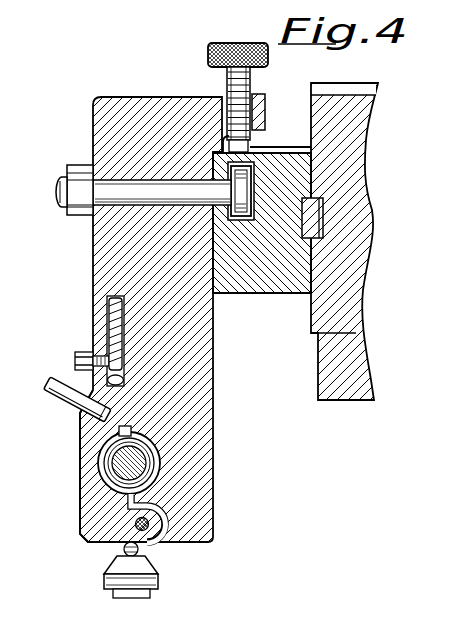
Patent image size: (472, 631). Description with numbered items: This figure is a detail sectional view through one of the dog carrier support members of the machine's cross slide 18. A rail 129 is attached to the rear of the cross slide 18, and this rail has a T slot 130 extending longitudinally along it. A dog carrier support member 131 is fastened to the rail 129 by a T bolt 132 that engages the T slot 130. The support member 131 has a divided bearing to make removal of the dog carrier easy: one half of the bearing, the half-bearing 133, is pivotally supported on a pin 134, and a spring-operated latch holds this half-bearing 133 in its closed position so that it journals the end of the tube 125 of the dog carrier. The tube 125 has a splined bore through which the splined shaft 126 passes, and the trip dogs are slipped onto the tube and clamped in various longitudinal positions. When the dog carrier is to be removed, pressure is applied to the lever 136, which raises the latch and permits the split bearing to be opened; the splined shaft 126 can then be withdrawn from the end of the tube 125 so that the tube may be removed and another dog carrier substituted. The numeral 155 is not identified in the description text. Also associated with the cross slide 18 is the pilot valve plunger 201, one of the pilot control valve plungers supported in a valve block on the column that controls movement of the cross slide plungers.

The cross slide 18 is at (366, 280).
The tube 125 is at (108, 462).
The splined shaft 126 is at (118, 473).
The rail 129 is at (270, 294).
The T slot 130 is at (253, 186).
The dog carrier support member 131 is at (215, 446).
The T bolt 132 is at (108, 193).
The half-bearing 133 is at (85, 440).
The pin 134 is at (161, 547).
The lever 136 is at (58, 392).
The adjusting screw 155 is at (95, 348).
The pilot valve plunger 201 is at (120, 555).